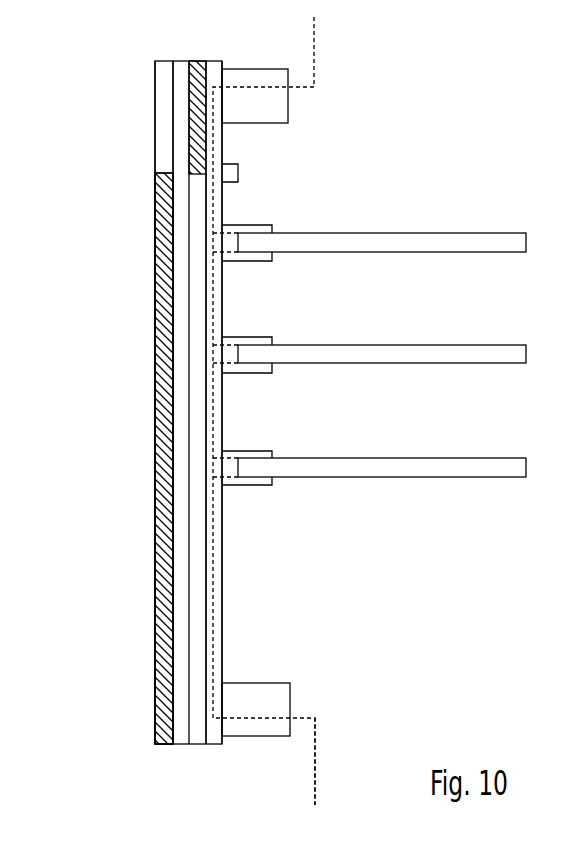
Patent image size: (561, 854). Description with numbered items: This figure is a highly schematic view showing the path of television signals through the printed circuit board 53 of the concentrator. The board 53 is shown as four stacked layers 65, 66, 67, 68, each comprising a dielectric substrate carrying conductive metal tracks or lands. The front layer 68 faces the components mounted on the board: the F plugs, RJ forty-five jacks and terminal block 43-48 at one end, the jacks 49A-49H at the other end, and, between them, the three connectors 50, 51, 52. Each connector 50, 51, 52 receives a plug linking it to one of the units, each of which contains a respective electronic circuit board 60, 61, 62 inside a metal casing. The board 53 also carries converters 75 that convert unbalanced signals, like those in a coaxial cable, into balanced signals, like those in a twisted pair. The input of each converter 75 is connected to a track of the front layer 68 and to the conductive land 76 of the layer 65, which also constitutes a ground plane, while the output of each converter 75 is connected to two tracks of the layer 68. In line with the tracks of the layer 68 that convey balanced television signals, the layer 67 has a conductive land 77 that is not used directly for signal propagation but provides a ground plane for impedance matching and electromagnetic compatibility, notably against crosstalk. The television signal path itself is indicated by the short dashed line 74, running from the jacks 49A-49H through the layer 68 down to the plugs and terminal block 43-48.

The printed circuit board 53 is at (140, 62).
The layer 65 is at (158, 108).
The layer 66 is at (182, 127).
The layer 67 is at (195, 61).
The front layer 68 is at (212, 60).
The conductive land 77 is at (198, 157).
The conductive land 76 is at (157, 315).
The jacks 49A-49H is at (278, 103).
The converter 75 is at (233, 173).
The connector 50 is at (255, 228).
The connector 51 is at (250, 340).
The connector 52 is at (257, 454).
The electronic circuit board 60 is at (393, 240).
The electronic circuit board 61 is at (372, 352).
The electronic circuit board 62 is at (380, 465).
The F plugs, RJ 45 jacks and terminal block 43-48 is at (247, 697).
The short dashed line 74 is at (316, 747).